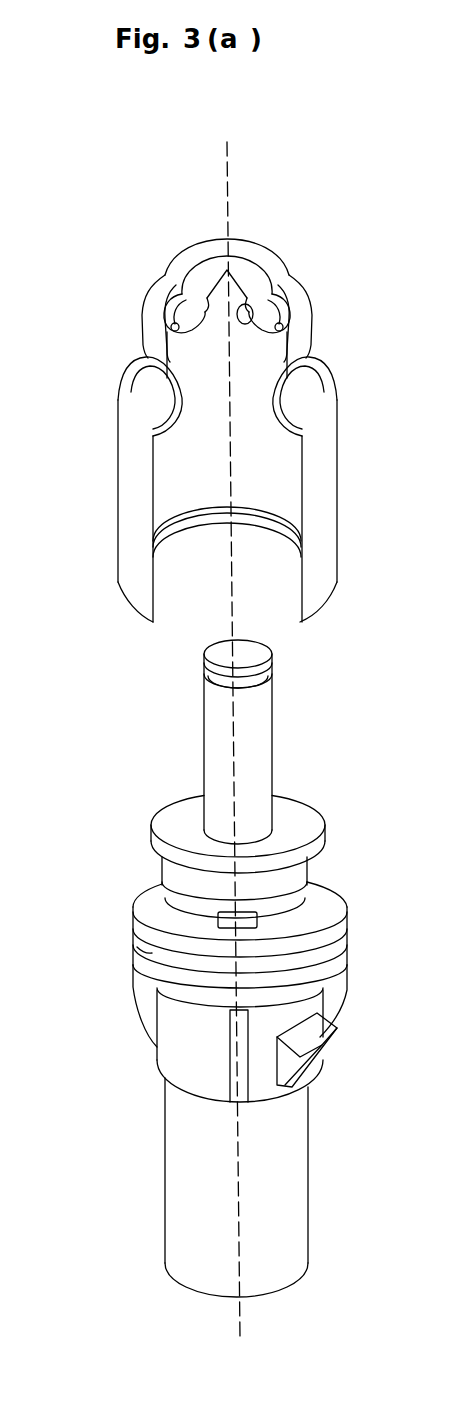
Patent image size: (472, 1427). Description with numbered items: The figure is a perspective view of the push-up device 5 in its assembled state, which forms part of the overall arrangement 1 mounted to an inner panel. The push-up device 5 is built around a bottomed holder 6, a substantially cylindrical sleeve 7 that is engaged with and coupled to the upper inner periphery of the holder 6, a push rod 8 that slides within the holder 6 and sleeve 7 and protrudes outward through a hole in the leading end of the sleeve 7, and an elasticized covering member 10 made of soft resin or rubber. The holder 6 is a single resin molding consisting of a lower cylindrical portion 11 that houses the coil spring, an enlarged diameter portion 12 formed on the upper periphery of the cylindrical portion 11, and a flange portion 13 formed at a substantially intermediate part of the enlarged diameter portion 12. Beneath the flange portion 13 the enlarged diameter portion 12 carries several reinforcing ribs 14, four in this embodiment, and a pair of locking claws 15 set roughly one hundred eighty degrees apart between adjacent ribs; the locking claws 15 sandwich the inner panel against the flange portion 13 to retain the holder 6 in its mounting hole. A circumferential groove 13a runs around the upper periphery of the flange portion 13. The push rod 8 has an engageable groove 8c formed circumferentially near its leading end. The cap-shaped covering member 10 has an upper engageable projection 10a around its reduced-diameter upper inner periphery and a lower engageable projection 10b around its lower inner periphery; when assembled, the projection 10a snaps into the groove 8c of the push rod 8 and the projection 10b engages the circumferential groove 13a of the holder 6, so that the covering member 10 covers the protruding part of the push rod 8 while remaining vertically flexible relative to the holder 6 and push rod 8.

The connector terminal 1 is at (243, 738).
The push-up device 5 is at (440, 252).
The holder 6 is at (327, 1153).
The sleeve 7 is at (302, 852).
The push rod 8 is at (272, 733).
The engageable groove 8c is at (205, 684).
The covering member 10 is at (312, 438).
The engageable projection 10a is at (250, 322).
The engageable projection 10b is at (222, 510).
The cylindrical portion 11 is at (286, 1222).
The enlarged diameter portion 12 is at (160, 1065).
The flange portion 13 is at (348, 935).
The circumferential groove 13a is at (135, 930).
The reinforcing ribs 14 is at (132, 985).
The locking claws 15 is at (330, 1050).